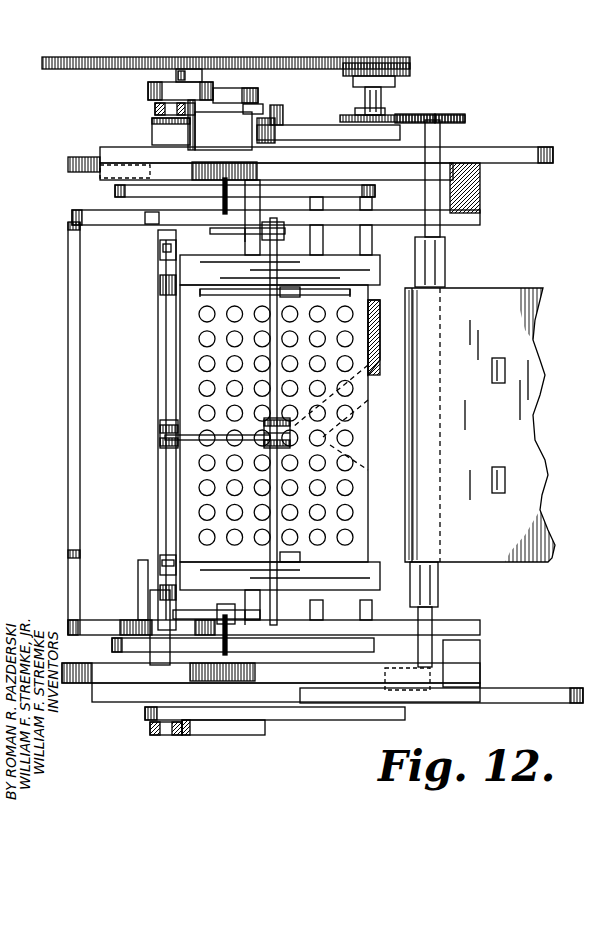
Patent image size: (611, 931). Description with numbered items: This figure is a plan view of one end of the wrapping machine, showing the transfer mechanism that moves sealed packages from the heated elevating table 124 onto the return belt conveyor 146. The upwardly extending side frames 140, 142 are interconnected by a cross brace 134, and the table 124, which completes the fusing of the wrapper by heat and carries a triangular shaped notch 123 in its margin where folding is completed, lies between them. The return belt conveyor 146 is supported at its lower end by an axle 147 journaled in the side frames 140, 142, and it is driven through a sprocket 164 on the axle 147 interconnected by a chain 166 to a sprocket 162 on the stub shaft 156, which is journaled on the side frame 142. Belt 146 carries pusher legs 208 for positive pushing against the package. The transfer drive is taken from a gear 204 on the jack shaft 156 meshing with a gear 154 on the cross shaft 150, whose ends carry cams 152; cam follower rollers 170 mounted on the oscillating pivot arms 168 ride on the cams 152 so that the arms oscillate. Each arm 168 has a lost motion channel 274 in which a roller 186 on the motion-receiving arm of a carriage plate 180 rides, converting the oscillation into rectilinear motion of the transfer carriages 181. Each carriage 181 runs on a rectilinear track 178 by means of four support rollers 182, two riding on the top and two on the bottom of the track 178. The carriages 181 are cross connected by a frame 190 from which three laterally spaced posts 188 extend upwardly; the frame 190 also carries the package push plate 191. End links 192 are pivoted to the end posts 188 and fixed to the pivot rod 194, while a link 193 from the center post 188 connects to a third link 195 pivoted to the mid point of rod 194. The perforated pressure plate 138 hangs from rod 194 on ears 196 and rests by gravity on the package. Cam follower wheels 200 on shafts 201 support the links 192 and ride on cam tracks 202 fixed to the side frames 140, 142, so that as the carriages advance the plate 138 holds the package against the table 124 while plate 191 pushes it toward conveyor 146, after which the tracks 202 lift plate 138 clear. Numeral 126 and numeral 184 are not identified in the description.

The gear 154 is at (226, 51).
The gear 204 is at (401, 66).
The cross shaft 150 is at (219, 74).
The cam 152 is at (159, 90).
The cam follower roller 170 is at (254, 87).
The lost motion channel 274 is at (144, 103).
The roller 186 is at (154, 440).
The stub shaft 156 is at (345, 101).
The oscillating pivot arm 168 is at (246, 425).
The sprocket 162 is at (402, 103).
The chain 166 is at (426, 103).
The sprocket 164 is at (465, 103).
The plate 126 is at (275, 420).
The side frame 142 is at (308, 149).
The cam follower wheel 200 is at (223, 419).
The cam track 202 is at (231, 427).
The plate 180 is at (202, 418).
The rectilinear track 178 is at (254, 419).
The shaft 201 is at (250, 420).
The link 192 is at (229, 423).
The cross brace 134 is at (46, 428).
The frame 190 is at (142, 430).
The lug 184 is at (131, 228).
The transfer carriage 181 is at (136, 253).
The post 188 is at (130, 433).
The heated elevating table 124 is at (256, 432).
The pivot rod 194 is at (275, 279).
The ear 196 is at (306, 430).
The link 193 is at (197, 421).
The link 195 is at (289, 421).
The triangular shaped notch 123 is at (345, 385).
The perforated pressure plate 138 is at (414, 418).
The axle 147 is at (453, 393).
The return belt conveyor 146 is at (480, 410).
The pusher leg 208 is at (499, 425).
The package push plate 191 is at (144, 564).
The support roller 182 is at (187, 617).
The side frame 140 is at (322, 693).